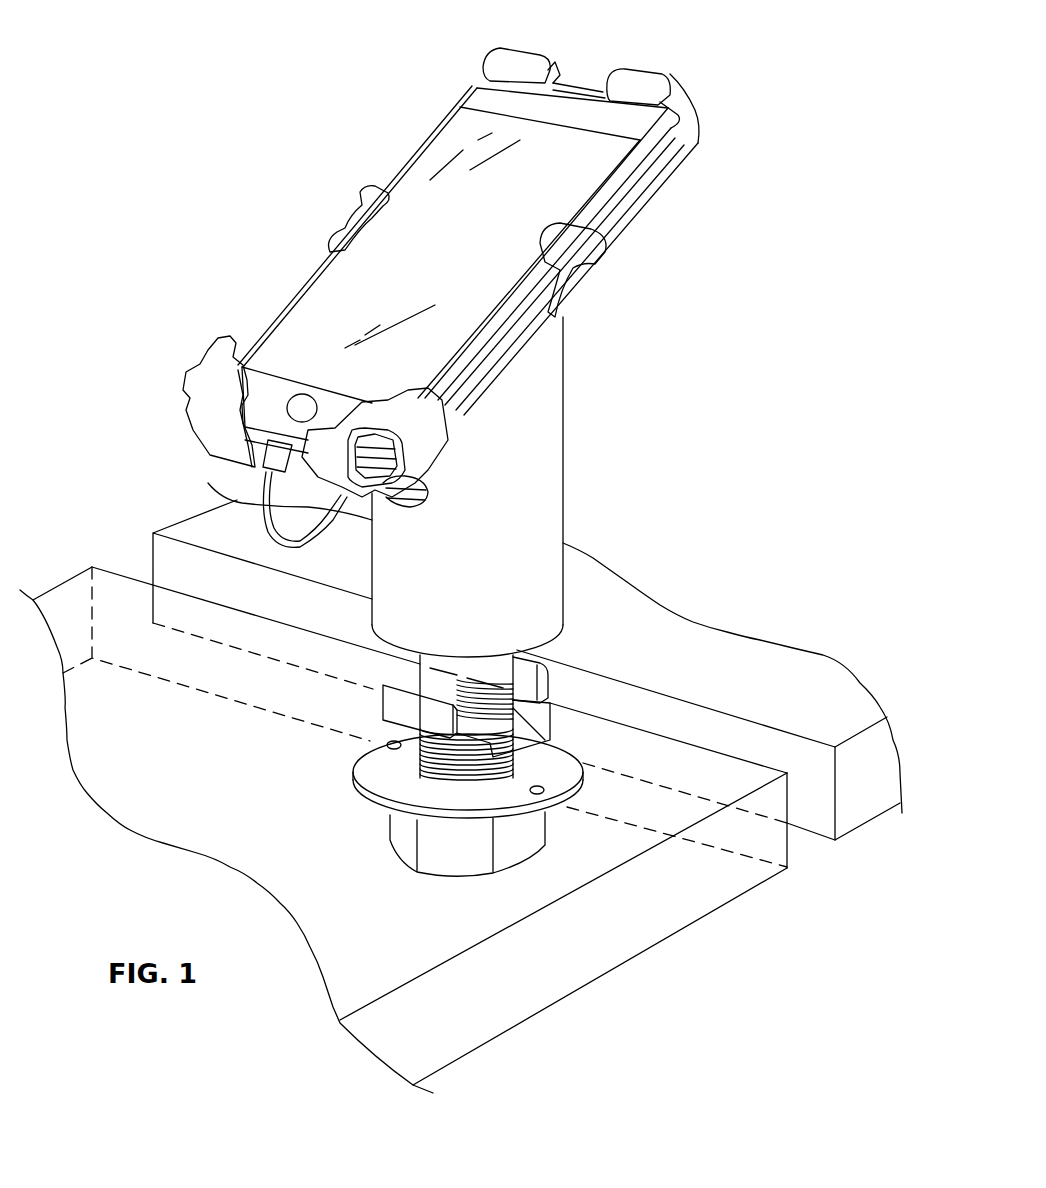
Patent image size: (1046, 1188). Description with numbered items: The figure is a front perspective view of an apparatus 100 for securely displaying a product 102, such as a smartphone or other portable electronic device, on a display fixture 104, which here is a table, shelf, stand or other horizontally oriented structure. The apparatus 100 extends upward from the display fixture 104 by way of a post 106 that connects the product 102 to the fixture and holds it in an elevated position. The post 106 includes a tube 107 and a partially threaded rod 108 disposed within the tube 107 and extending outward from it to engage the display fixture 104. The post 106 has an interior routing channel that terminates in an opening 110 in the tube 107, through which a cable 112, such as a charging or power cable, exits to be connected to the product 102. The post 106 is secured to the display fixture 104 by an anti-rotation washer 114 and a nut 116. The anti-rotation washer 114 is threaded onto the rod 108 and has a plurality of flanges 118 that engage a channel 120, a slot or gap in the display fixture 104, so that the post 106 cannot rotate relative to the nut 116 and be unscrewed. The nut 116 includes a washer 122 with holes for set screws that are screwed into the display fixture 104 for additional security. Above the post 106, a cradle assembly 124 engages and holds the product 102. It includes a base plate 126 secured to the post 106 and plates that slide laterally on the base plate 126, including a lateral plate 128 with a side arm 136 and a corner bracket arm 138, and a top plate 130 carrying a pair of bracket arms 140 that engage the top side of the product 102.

The apparatus 100 is at (297, 116).
The product 102 is at (490, 104).
The display fixture 104 is at (560, 960).
The post 106 is at (566, 392).
The tube 107 is at (552, 492).
The rod 108 is at (418, 660).
The opening 110 is at (420, 505).
The cable 112 is at (302, 545).
The anti-rotation washer 114 is at (553, 693).
The nut 116 is at (546, 832).
The flanges 118 is at (383, 710).
The channel 120 is at (817, 854).
The washer 122 is at (383, 812).
The cradle assembly 124 is at (674, 184).
The base plate 126 is at (655, 217).
The lateral plate 128 is at (617, 235).
The top plate 130 is at (690, 118).
The side arm 136 is at (350, 200).
The corner bracket arm 138 is at (443, 433).
The bracket arms 140 is at (510, 60).